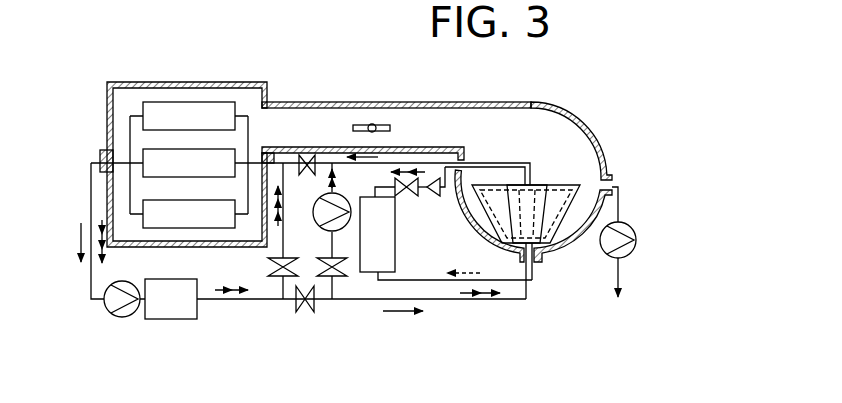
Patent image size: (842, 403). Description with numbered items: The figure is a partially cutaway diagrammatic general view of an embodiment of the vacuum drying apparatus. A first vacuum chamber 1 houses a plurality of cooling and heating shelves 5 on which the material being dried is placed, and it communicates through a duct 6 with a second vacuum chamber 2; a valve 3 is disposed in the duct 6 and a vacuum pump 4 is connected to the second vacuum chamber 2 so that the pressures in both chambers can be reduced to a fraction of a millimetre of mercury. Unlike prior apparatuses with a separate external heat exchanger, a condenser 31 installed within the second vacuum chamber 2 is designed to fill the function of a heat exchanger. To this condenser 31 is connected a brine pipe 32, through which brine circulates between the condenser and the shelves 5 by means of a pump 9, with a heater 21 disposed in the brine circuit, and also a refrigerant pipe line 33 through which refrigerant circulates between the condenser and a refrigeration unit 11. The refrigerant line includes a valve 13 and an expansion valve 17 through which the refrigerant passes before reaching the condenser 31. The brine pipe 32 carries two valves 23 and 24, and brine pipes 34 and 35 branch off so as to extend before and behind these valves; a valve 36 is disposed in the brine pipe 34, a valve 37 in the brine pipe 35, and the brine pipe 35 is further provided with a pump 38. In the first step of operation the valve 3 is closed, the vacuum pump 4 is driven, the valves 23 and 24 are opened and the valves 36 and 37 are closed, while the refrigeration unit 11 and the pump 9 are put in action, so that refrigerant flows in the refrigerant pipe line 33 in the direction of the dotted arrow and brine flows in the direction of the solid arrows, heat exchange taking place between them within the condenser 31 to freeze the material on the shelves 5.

The first vacuum chamber 1 is at (247, 88).
The second vacuum chamber 2 is at (547, 118).
The valve 3 is at (383, 125).
The vacuum pump 4 is at (637, 243).
The cooling and heating shelves 5 is at (182, 127).
The duct 6 is at (337, 100).
The pump 9 is at (122, 318).
The first refrigeration unit 11 is at (396, 253).
The valve 13 is at (408, 198).
The expansion valve 17 is at (432, 198).
The heater 21 is at (173, 320).
The valve 23 is at (305, 153).
The valve 24 is at (305, 314).
The condenser 31 is at (557, 184).
The brine pipe 32 is at (91, 191).
The refrigerant pipe line 33 is at (447, 283).
The brine pipe 34 is at (268, 260).
The brine pipe 35 is at (341, 266).
The valve 36 is at (278, 282).
The valve 37 is at (333, 283).
The pump 38 is at (320, 226).